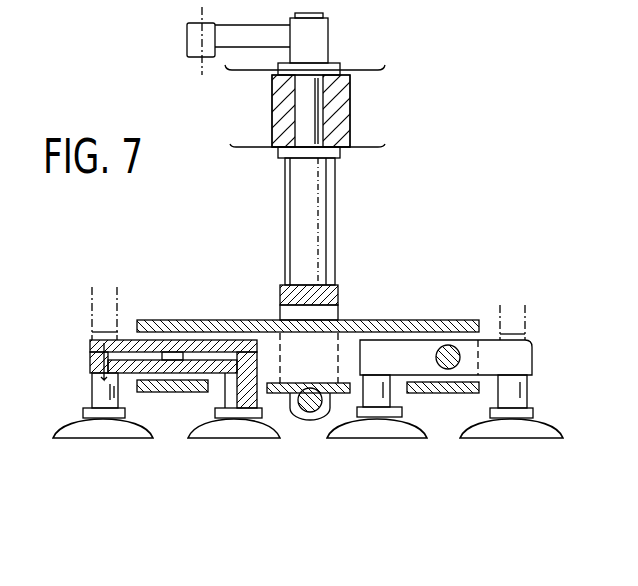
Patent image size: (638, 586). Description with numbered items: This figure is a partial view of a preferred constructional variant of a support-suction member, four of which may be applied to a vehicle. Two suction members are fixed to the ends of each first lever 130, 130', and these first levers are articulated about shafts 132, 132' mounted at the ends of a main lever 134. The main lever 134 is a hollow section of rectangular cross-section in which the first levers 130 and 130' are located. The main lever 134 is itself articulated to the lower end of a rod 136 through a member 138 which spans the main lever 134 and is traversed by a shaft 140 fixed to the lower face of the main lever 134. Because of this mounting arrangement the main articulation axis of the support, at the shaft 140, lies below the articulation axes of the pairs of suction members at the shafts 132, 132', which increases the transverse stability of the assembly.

The first lever 130 is at (173, 339).
The first lever 130' is at (446, 334).
The shaft 132 is at (160, 315).
The shaft 132' is at (498, 317).
The main lever 134 is at (400, 298).
The rod 136 is at (320, 207).
The member 138 is at (385, 287).
The shaft 140 is at (310, 422).